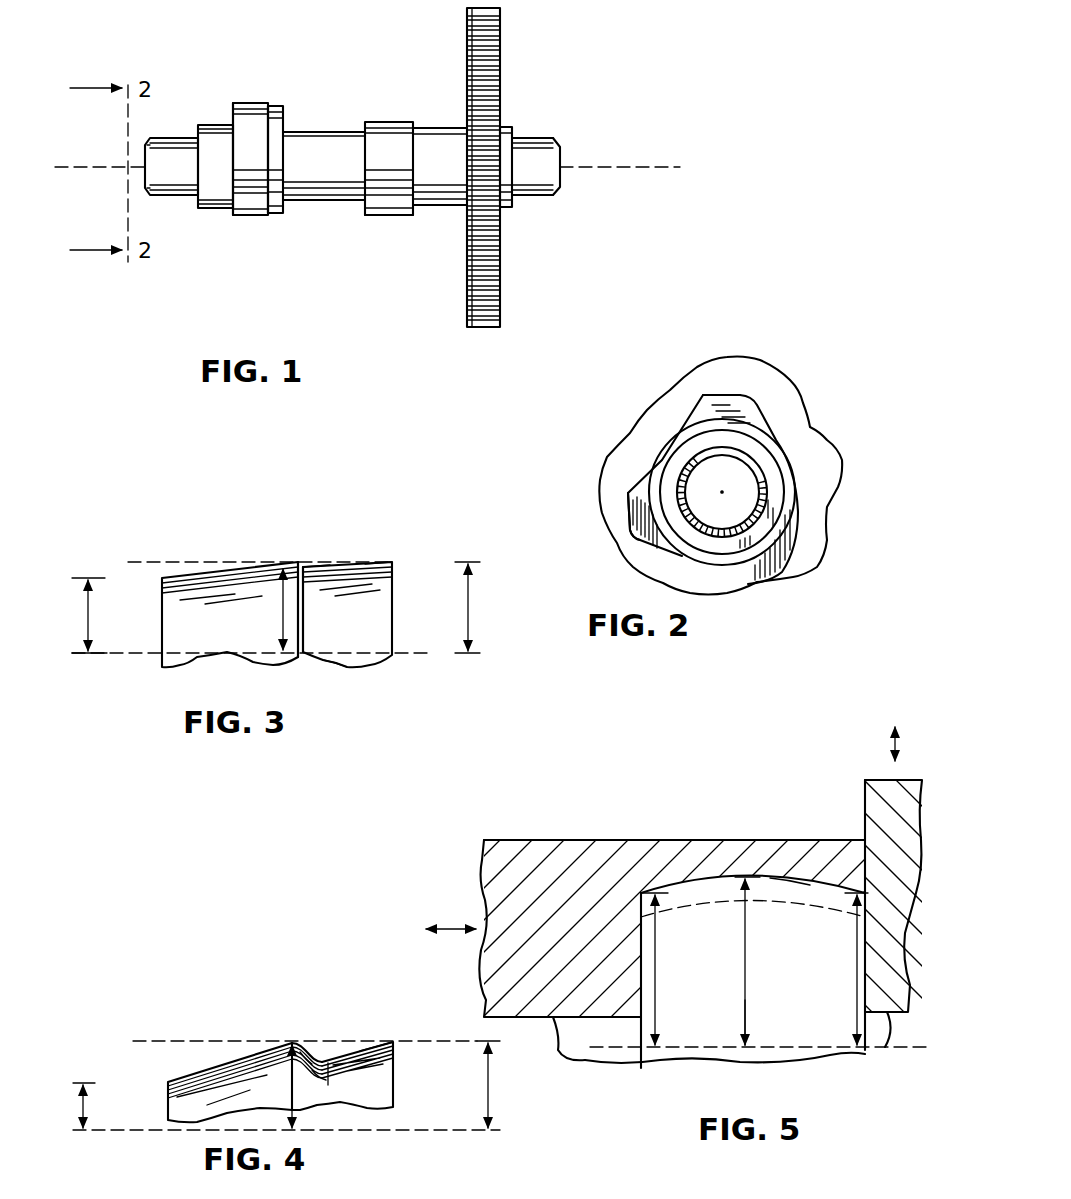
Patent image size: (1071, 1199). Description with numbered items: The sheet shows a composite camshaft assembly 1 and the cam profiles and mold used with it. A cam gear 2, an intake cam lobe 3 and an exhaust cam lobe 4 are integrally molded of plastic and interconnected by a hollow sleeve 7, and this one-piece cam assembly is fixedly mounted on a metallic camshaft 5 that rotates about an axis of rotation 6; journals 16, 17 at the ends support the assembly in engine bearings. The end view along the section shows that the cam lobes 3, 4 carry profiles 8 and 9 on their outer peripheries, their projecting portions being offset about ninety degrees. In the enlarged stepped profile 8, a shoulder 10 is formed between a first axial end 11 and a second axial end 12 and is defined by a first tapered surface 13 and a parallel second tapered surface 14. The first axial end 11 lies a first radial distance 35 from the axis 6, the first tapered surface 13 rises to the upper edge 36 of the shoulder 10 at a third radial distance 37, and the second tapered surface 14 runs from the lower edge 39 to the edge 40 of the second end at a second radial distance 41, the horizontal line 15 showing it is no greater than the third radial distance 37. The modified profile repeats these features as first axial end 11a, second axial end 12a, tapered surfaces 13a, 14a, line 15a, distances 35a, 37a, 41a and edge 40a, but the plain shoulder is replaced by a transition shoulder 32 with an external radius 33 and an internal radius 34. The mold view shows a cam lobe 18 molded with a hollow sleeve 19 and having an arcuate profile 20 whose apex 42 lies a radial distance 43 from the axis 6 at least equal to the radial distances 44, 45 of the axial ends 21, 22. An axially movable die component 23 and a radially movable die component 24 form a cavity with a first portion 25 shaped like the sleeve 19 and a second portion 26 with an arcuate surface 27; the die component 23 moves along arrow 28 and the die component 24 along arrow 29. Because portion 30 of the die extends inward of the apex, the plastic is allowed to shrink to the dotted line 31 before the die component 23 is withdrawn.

In FIG. 1, the camshaft assembly 1 is at (570, 60).
In FIG. 1, the cam gear 2 is at (500, 39).
In FIG. 2, the cam gear 2 is at (815, 450).
In FIG. 1, the intake cam lobe 3 is at (250, 218).
In FIG. 2, the intake cam lobe 3 is at (762, 404).
In FIG. 3, the intake cam lobe 3 is at (373, 666).
In FIG. 1, the exhaust cam lobe 4 is at (393, 220).
In FIG. 2, the exhaust cam lobe 4 is at (656, 455).
In FIG. 1, the camshaft 5 is at (562, 194).
In FIG. 2, the camshaft 5 is at (713, 522).
In FIG. 1, the axis of rotation 6 is at (655, 166).
In FIG. 3, the axis of rotation 6 is at (402, 652).
In FIG. 4, the axis of rotation 6 is at (411, 1130).
In FIG. 5, the axis of rotation 6 is at (910, 1047).
In FIG. 1, the hollow sleeve 7 is at (317, 132).
In FIG. 2, the hollow sleeve 7 is at (778, 512).
In FIG. 1, the cam profile 8 is at (252, 103).
In FIG. 2, the cam profile 8 is at (720, 395).
In FIG. 1, the cam profile 9 is at (378, 122).
In FIG. 2, the cam profile 9 is at (632, 518).
In FIG. 1, the shoulder 10 is at (269, 163).
In FIG. 3, the shoulder 10 is at (307, 567).
In FIG. 1, the first axial end 11 is at (233, 103).
In FIG. 3, the first axial end 11 is at (162, 632).
In FIG. 1, the second axial end 12 is at (284, 112).
In FIG. 3, the second axial end 12 is at (395, 592).
In FIG. 3, the first axially extending tapered surface 13 is at (208, 562).
In FIG. 3, the second axially extending tapered surface 14 is at (357, 560).
In FIG. 3, the horizontal line 15 is at (147, 562).
In FIG. 1, the journal 16 is at (178, 196).
In FIG. 1, the journal 17 is at (533, 200).
In FIG. 5, the cam lobe 18 is at (792, 1056).
In FIG. 5, the hollow sleeve 19 is at (597, 1059).
In FIG. 5, the profile 20 is at (712, 880).
In FIG. 5, the axial end 21 is at (642, 984).
In FIG. 5, the axial end 22 is at (878, 1004).
In FIG. 5, the axially movable die component 23 is at (593, 842).
In FIG. 5, the radially movable die component 24 is at (866, 793).
In FIG. 5, the first portion 25 is at (626, 1028).
In FIG. 5, the second portion 26 is at (858, 952).
In FIG. 5, the arcuate shaped surface 27 is at (768, 889).
In FIG. 5, the arrow 28 is at (455, 925).
In FIG. 5, the arrow 29 is at (893, 746).
In FIG. 5, the portion 30 is at (856, 900).
In FIG. 5, the dotted line 31 is at (762, 962).
In FIG. 4, the transition shoulder 32 is at (311, 1040).
In FIG. 4, the external radius 33 is at (293, 1041).
In FIG. 4, the internal radius 34 is at (325, 1053).
In FIG. 3, the first radial distance 35 is at (86, 610).
In FIG. 3, the upper edge 36 is at (253, 565).
In FIG. 3, the third radial distance 37 is at (284, 586).
In FIG. 3, the lower edge 39 is at (327, 565).
In FIG. 3, the edge 40 is at (393, 562).
In FIG. 3, the second radial distance 41 is at (468, 625).
In FIG. 5, the apex 42 is at (747, 876).
In FIG. 5, the radial distance 43 is at (746, 998).
In FIG. 5, the radial distance 44 is at (660, 950).
In FIG. 5, the radial distance 45 is at (856, 966).
In FIG. 4, the first axial end 11a is at (168, 1101).
In FIG. 4, the second axial end 12a is at (395, 1090).
In FIG. 4, the first axially extending tapered surface 13a is at (233, 1060).
In FIG. 4, the second axially extending tapered surface 14a is at (365, 1046).
In FIG. 4, the horizontal line 15a is at (163, 1040).
In FIG. 4, the first radial distance 35a is at (83, 1103).
In FIG. 4, the third radial distance 37a is at (290, 1084).
In FIG. 4, the edge 40a is at (393, 1041).
In FIG. 4, the second radial distance 41a is at (490, 1100).